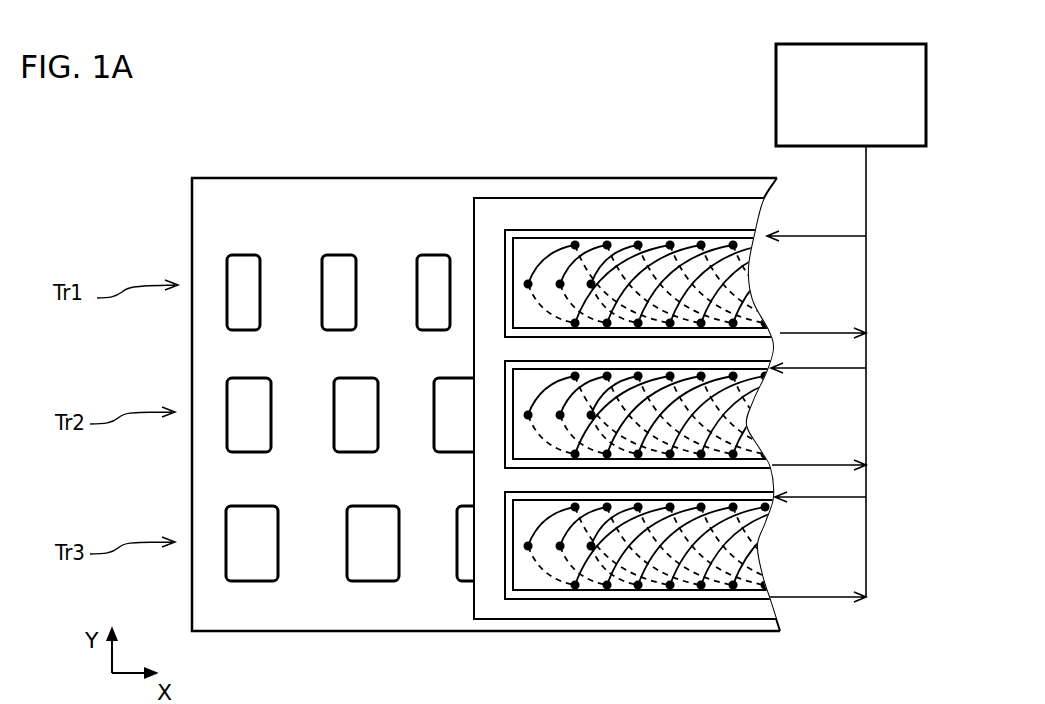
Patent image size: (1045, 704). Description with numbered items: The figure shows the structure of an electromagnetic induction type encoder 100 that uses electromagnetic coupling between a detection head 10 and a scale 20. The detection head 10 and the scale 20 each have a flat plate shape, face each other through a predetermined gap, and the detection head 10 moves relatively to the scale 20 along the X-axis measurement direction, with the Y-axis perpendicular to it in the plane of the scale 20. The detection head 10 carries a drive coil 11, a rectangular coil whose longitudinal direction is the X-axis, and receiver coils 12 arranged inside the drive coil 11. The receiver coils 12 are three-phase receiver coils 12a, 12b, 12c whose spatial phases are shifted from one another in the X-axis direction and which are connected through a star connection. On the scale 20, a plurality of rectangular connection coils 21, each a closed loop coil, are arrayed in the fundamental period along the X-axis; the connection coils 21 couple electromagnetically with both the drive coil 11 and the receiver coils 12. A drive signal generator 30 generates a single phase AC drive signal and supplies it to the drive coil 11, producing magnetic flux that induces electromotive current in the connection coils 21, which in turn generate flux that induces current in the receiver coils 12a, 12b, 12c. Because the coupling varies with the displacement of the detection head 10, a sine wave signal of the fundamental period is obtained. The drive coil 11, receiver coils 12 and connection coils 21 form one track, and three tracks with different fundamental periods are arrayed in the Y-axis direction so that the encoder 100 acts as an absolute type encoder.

The electromagnetic induction type encoder 100 is at (474, 30).
The detection head 10 is at (731, 198).
The drive coil 11 is at (667, 230).
The receiver coils 12 is at (580, 103).
The receiver coil 12a is at (558, 250).
The receiver coil 12b is at (597, 250).
The receiver coil 12c is at (628, 248).
The scale 20 is at (240, 178).
The connection coils 21 is at (332, 256).
The drive signal generator 30 is at (866, 44).